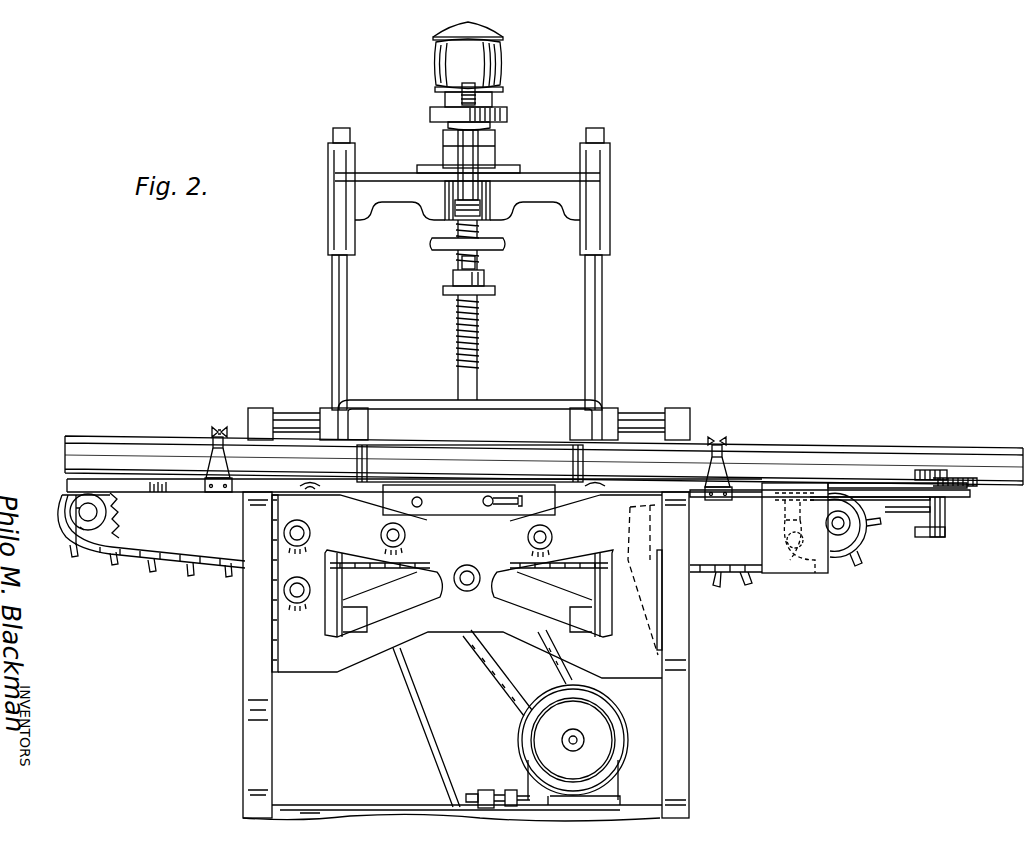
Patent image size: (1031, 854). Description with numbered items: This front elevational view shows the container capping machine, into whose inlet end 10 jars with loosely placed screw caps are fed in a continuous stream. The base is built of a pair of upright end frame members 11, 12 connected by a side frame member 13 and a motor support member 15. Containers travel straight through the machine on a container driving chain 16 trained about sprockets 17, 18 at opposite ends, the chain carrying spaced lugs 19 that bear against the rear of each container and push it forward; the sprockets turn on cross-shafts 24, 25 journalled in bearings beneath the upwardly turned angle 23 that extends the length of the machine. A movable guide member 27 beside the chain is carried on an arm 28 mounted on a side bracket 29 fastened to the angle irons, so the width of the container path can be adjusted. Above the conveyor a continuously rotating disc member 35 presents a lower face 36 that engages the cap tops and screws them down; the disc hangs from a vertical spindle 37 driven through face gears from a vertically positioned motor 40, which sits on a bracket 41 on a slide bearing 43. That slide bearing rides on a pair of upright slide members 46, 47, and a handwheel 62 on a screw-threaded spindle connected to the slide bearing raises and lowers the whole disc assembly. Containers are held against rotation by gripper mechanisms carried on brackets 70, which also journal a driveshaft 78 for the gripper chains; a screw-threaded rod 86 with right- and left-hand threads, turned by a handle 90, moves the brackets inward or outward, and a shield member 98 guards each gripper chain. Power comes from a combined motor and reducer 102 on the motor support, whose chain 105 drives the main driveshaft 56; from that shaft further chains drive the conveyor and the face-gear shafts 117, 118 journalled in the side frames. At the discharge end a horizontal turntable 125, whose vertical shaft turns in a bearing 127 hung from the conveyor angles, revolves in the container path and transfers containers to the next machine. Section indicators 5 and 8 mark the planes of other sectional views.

The section line 5 is at (445, 351).
The section line 8 is at (806, 418).
The inlet end 10 is at (55, 432).
The upright end frame member 11 is at (255, 661).
The upright end frame member 12 is at (680, 700).
The side frame member 13 is at (308, 672).
The motor support member 15 is at (618, 800).
The container driving chain 16 is at (135, 553).
The sprocket 17 is at (95, 535).
The sprocket 18 is at (850, 530).
The spaced lugs 19 is at (152, 572).
The upwardly turned angle 23 is at (75, 482).
The cross-shaft 24 is at (88, 512).
The cross-shaft 25 is at (838, 524).
The movable guide member 27 is at (988, 470).
The arm 28 is at (230, 435).
The side bracket 29 is at (218, 463).
The disc member 35 is at (485, 278).
The lower face 36 is at (440, 300).
The vertical spindle 37 is at (462, 260).
The motor 40 is at (498, 60).
The bracket 41 is at (492, 150).
The slide bearing 43 is at (570, 198).
The upright slide member 46 is at (334, 305).
The upright slide member 47 is at (598, 340).
The main driveshaft 56 is at (467, 580).
The handwheel 62 is at (500, 247).
The bracket 70 is at (469, 500).
The driveshaft 78 is at (542, 536).
The screw-threaded rod 86 is at (419, 507).
The handle 90 is at (487, 506).
The shield member 98 is at (500, 470).
The combined motor and reducer 102 is at (545, 730).
The chain 105 is at (490, 672).
The shaft 117 is at (300, 531).
The shaft 118 is at (297, 592).
The horizontal turntable 125 is at (990, 490).
The bearing 127 is at (930, 537).